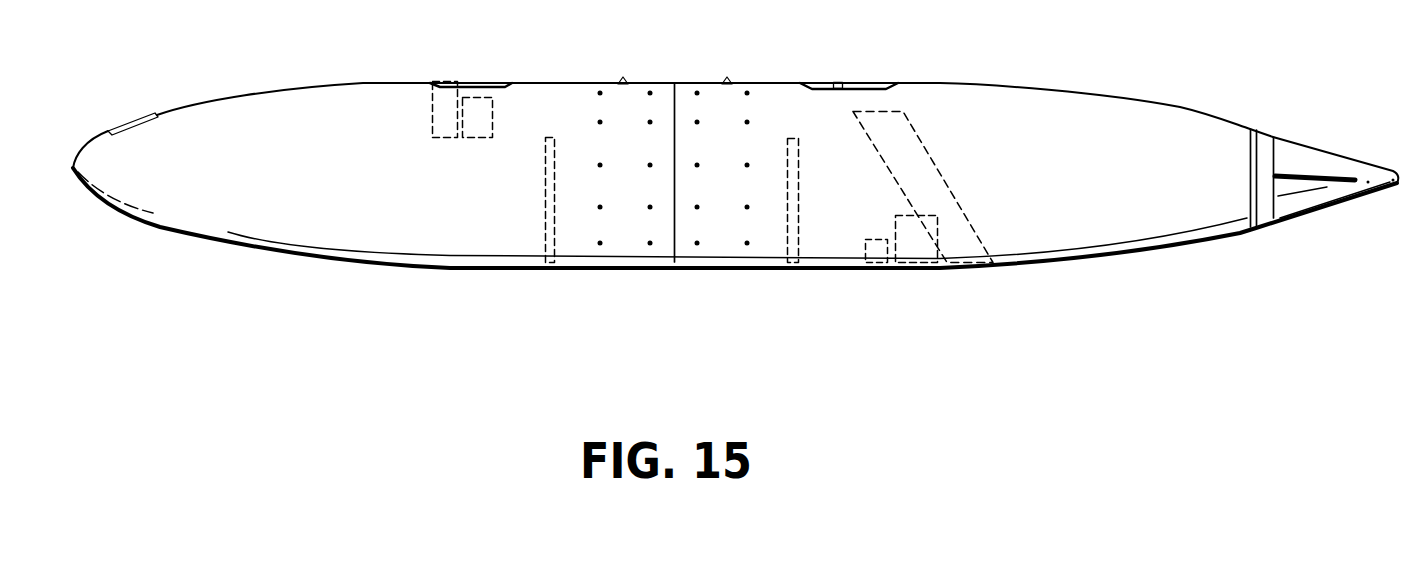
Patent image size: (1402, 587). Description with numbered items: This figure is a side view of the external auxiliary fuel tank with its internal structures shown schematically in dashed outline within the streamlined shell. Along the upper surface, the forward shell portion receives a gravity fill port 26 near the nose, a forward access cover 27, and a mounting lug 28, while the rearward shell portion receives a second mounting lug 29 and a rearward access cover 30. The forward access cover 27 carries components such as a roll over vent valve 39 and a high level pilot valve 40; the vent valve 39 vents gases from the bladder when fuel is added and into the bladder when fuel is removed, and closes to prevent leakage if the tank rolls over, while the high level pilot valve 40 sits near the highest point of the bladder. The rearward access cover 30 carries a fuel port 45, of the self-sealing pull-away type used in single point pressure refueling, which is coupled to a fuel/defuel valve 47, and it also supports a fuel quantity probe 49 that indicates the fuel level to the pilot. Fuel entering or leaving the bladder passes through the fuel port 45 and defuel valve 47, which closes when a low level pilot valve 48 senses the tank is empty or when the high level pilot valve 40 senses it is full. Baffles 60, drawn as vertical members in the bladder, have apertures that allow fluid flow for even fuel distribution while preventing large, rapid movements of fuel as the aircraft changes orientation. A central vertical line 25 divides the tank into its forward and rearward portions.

The divider line / panel seam 25 is at (672, 228).
The gravity fill port 26 is at (137, 122).
The forward access cover 27 is at (509, 85).
The mounting lug 28 is at (623, 82).
The mounting lug 29 is at (727, 82).
The rearward access cover 30 is at (882, 85).
The roll over vent valve 39 is at (438, 115).
The high level pilot valve 40 is at (478, 122).
The fuel port 45 is at (828, 82).
The fuel/defuel valve 47 is at (915, 245).
The low level pilot valve 48 is at (868, 243).
The fuel quantity probe 49 is at (958, 230).
The baffles 60 is at (547, 200).